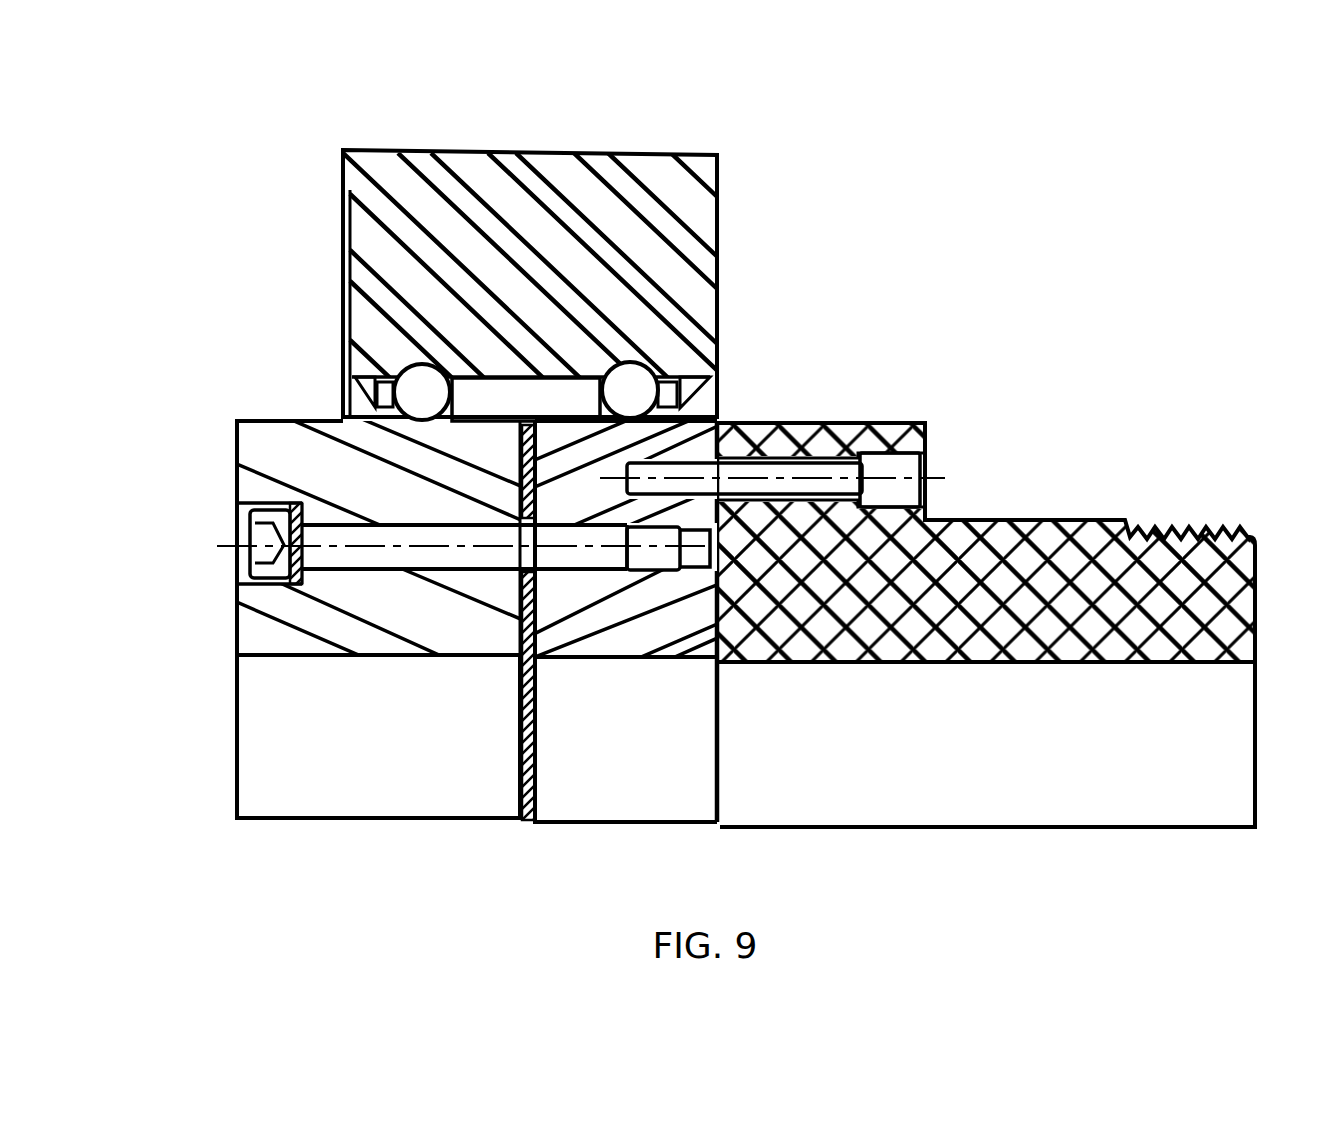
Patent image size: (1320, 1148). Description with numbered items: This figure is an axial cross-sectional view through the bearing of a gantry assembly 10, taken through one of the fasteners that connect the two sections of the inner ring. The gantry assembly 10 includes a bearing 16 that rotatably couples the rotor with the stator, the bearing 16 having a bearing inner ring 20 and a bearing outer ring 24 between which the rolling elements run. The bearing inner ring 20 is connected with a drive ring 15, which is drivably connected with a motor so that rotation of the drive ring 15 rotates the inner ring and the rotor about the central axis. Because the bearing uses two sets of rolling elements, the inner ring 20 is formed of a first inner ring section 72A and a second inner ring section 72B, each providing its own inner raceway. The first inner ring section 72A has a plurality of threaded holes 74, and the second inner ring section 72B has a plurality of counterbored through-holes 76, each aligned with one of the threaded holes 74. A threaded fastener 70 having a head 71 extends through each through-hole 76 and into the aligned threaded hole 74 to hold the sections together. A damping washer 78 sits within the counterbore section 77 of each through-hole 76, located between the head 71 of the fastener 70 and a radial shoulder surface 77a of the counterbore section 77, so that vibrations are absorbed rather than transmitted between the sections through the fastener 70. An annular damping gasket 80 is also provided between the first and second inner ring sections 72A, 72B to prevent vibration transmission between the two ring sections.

The gantry assembly 10 is at (858, 176).
The drive ring 15 is at (1098, 490).
The bearing 16 is at (653, 110).
The bearing inner ring 20 is at (217, 709).
The bearing outer ring 24 is at (407, 134).
The threaded fastener 70 is at (389, 579).
The head 71 is at (256, 514).
The first inner ring section 72A is at (400, 803).
The second inner ring section 72B is at (637, 803).
The threaded hole 74 is at (587, 560).
The counterbored through-hole 76 is at (449, 560).
The counterbore section 77 is at (246, 575).
The radial shoulder surface 77a is at (302, 512).
The damping washer 78 is at (298, 591).
The annular damping gasket 80 is at (512, 776).